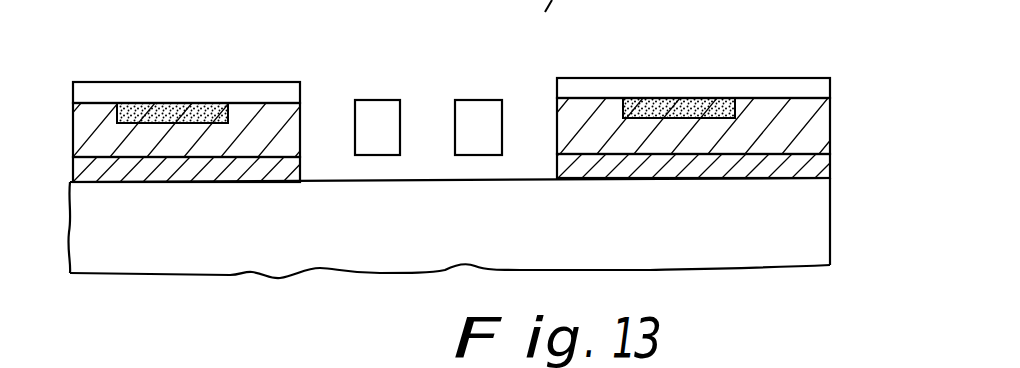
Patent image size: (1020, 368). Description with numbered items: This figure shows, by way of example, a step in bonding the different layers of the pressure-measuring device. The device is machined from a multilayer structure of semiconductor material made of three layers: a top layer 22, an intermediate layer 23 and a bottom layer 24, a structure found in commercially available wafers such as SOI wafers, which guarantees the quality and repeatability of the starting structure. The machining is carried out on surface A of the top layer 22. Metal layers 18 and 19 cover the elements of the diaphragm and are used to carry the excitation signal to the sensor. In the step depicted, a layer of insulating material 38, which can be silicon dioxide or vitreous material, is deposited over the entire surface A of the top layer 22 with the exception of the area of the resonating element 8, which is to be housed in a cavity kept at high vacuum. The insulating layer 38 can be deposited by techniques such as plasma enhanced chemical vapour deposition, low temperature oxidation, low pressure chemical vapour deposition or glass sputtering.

The resonating element 8 is at (370, 118).
The metal layer 18 is at (162, 102).
The metal layer 19 is at (717, 98).
The top layer 22 is at (817, 133).
The intermediate layer 23 is at (820, 165).
The bottom layer 24 is at (807, 237).
The layer of insulating material 38 is at (242, 90).